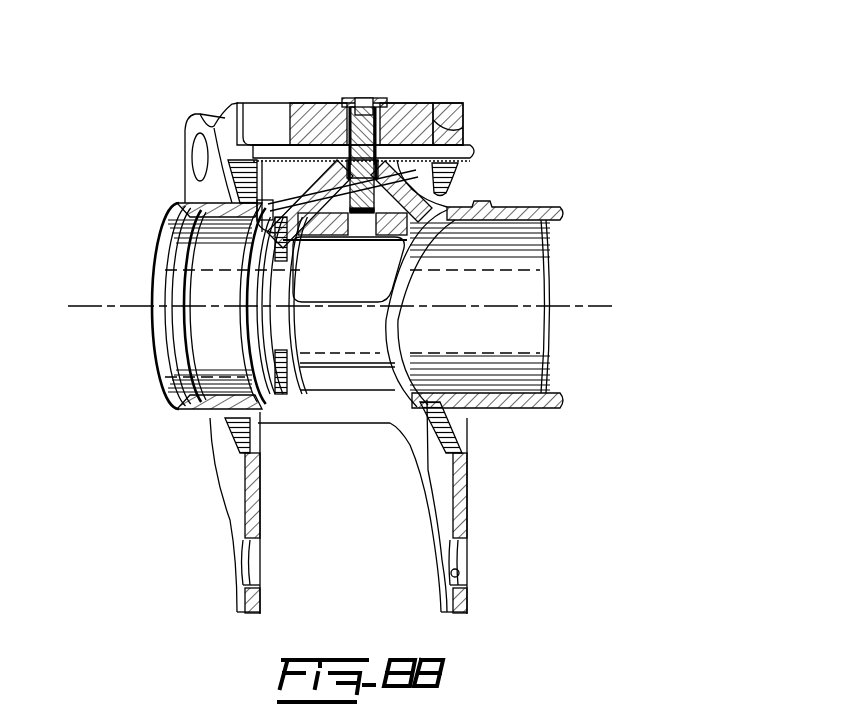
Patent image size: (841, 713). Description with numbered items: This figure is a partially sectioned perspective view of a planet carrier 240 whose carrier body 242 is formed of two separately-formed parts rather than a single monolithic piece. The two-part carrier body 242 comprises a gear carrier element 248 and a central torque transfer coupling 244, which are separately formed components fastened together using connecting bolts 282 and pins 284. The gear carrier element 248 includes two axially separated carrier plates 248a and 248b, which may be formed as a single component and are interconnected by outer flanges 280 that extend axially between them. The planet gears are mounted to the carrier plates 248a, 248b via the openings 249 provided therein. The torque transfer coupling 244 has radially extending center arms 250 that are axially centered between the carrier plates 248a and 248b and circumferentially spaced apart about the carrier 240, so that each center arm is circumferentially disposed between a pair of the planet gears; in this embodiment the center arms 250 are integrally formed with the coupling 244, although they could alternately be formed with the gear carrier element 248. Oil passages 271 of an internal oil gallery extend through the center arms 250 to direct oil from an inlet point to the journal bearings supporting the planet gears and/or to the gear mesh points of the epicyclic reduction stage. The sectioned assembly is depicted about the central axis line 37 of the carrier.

The central axis 37 is at (601, 306).
The planet carrier 240 is at (578, 188).
The carrier body 242 is at (213, 507).
The central torque transfer coupling 244 is at (173, 198).
The gear carrier element 248 is at (478, 492).
The carrier plate 248a is at (198, 128).
The carrier plate 248b is at (452, 192).
The opening 249 is at (198, 167).
The center arm 250 is at (333, 192).
The oil passage 271 is at (305, 195).
The outer flange 280 is at (432, 116).
The connecting bolt 282 is at (366, 98).
The pin 284 is at (385, 185).